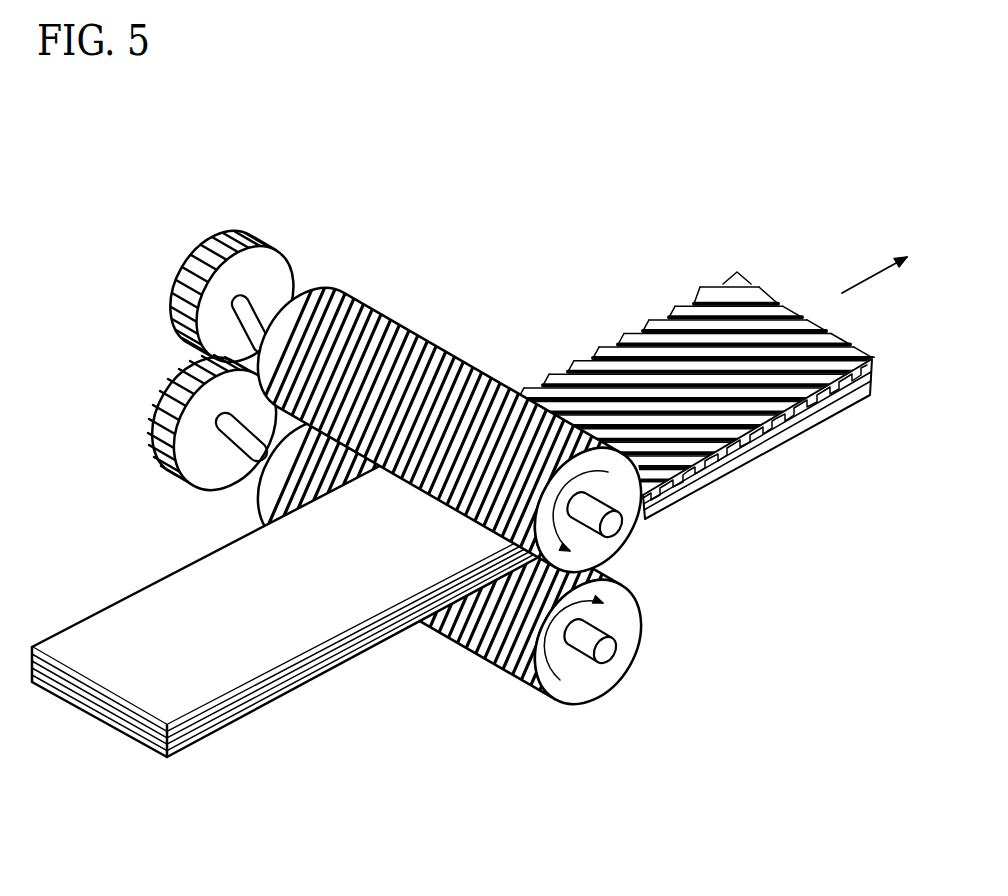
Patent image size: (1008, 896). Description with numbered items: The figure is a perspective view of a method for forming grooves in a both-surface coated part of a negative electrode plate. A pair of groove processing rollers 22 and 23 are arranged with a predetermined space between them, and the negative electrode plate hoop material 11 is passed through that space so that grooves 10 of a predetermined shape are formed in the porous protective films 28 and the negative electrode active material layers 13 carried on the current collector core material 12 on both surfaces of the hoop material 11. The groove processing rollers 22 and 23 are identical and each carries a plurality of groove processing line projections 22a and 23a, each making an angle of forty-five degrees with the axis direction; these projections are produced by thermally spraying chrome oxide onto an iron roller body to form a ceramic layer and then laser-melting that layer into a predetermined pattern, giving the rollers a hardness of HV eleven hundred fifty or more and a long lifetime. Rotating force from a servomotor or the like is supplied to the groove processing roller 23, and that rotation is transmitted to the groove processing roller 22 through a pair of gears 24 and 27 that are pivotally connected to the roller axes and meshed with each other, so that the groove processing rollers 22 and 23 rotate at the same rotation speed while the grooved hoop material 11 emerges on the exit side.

The grooves 10 is at (783, 337).
The negative electrode plate hoop material 11 is at (123, 573).
The current collector core material 12 is at (737, 447).
The negative electrode active material layer 13 is at (820, 420).
The groove processing roller (movable roller) 22 is at (461, 406).
The groove processing line projections 22a is at (480, 378).
The groove processing roller (fixed roller) 23 is at (474, 582).
The groove processing line projections 23a is at (520, 635).
The gear 24 is at (183, 274).
The gear 27 is at (155, 401).
The porous protective film 28 is at (690, 322).